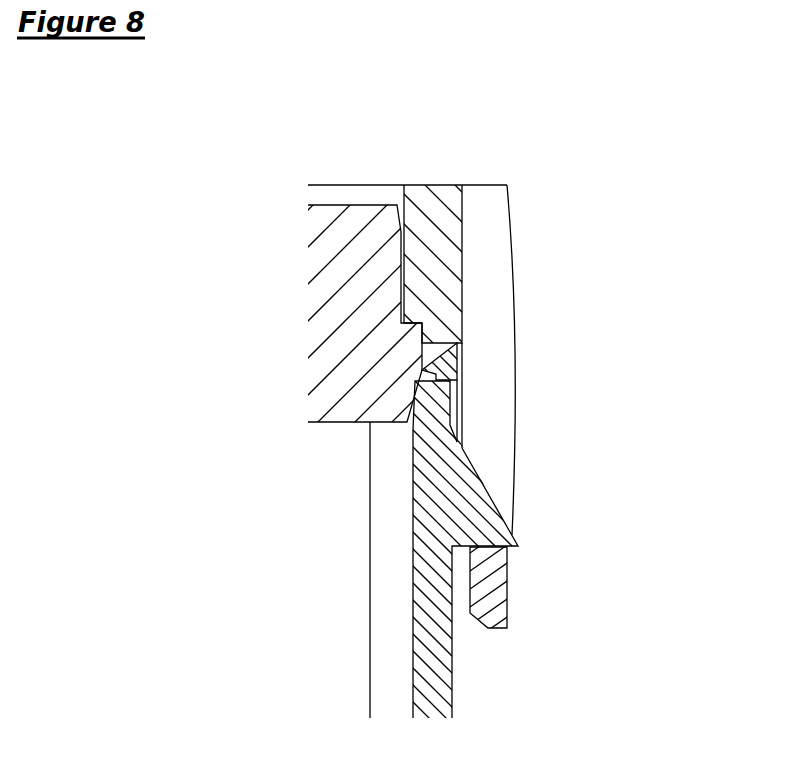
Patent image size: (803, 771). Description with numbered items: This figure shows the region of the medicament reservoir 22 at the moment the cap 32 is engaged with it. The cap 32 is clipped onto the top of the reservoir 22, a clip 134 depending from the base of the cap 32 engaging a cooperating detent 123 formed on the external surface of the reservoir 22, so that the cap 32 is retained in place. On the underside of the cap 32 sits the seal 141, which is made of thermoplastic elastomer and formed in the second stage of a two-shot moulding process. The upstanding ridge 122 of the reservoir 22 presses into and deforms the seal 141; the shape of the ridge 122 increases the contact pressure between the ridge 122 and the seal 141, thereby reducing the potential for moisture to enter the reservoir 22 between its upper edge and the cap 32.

The cap 32 is at (438, 238).
The seal 141 is at (345, 303).
The upstanding ridge 122 is at (437, 372).
The clip 134 is at (503, 444).
The detent 123 is at (490, 540).
The reservoir 22 is at (433, 680).